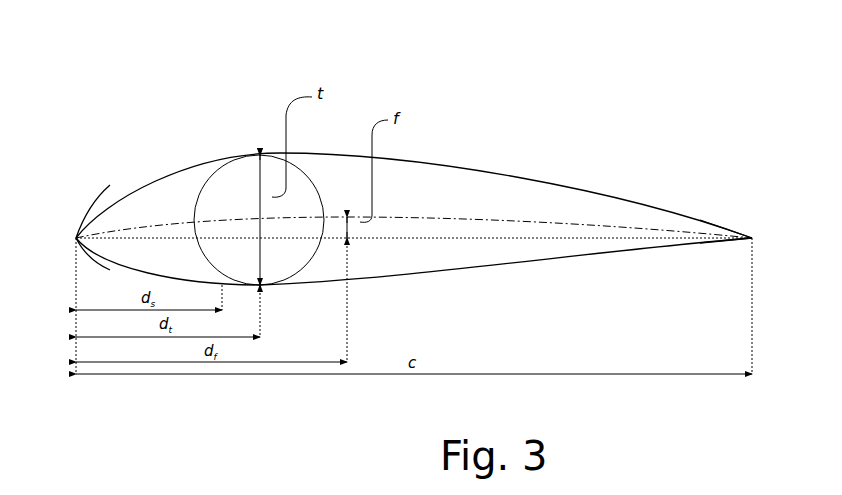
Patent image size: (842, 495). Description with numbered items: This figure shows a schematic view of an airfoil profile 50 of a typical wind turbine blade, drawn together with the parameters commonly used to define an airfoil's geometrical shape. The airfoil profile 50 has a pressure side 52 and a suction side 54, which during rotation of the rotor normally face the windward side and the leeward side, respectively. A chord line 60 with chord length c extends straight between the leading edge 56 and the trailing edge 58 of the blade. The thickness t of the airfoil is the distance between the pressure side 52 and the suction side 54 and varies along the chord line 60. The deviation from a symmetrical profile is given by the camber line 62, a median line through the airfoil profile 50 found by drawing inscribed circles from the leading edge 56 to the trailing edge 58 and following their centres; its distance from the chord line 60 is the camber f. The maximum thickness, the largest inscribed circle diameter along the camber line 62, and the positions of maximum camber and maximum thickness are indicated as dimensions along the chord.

The airfoil profile 50 is at (394, 90).
The pressure side 52 is at (548, 262).
The suction side 54 is at (497, 163).
The leading edge 56 is at (76, 238).
The trailing edge 58 is at (752, 238).
The chord line 60 is at (580, 237).
The camber line 62 is at (405, 215).